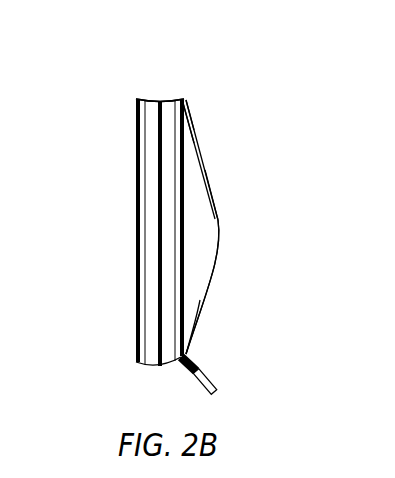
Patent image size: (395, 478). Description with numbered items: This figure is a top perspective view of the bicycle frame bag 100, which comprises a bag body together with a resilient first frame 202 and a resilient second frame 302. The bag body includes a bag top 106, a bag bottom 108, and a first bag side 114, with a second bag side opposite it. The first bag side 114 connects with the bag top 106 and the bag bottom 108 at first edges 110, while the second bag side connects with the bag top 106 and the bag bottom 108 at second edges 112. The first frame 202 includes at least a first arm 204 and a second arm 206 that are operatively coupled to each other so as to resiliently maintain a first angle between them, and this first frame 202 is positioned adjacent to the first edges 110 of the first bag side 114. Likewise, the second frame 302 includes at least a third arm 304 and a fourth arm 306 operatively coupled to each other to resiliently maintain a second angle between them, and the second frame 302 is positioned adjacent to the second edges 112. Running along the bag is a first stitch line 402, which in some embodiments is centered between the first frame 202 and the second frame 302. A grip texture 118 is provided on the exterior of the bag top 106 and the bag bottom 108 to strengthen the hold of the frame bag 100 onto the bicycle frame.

The bicycle frame bag 100 is at (277, 283).
The bag top 106 is at (137, 281).
The bag bottom 108 is at (201, 151).
The first edges 110 is at (190, 140).
The second edges 112 is at (137, 163).
The first bag side 114 is at (191, 326).
The grip texture 118 is at (150, 120).
The first frame 202 is at (187, 112).
The first arm 204 is at (178, 216).
The second arm 206 is at (213, 190).
The second frame 302 is at (137, 192).
The third arm 304 is at (137, 137).
The fourth arm 306 is at (133, 98).
The first stitch line 402 is at (157, 338).